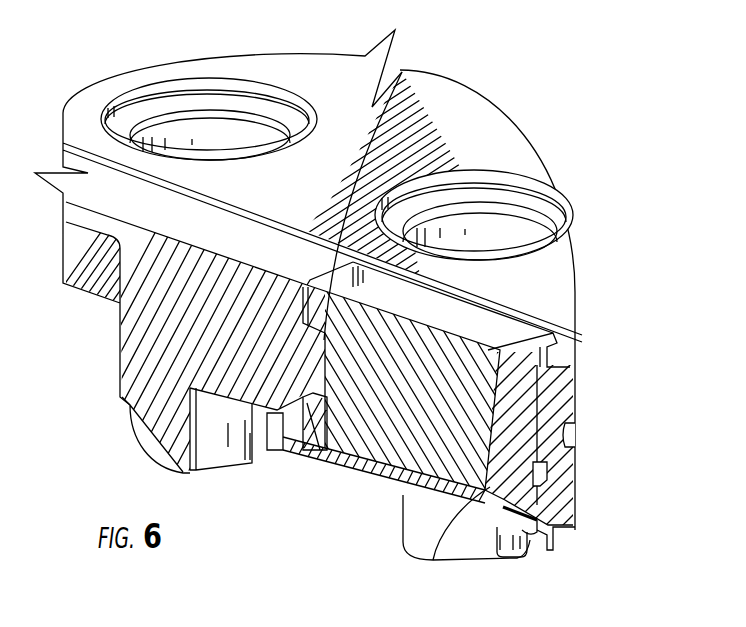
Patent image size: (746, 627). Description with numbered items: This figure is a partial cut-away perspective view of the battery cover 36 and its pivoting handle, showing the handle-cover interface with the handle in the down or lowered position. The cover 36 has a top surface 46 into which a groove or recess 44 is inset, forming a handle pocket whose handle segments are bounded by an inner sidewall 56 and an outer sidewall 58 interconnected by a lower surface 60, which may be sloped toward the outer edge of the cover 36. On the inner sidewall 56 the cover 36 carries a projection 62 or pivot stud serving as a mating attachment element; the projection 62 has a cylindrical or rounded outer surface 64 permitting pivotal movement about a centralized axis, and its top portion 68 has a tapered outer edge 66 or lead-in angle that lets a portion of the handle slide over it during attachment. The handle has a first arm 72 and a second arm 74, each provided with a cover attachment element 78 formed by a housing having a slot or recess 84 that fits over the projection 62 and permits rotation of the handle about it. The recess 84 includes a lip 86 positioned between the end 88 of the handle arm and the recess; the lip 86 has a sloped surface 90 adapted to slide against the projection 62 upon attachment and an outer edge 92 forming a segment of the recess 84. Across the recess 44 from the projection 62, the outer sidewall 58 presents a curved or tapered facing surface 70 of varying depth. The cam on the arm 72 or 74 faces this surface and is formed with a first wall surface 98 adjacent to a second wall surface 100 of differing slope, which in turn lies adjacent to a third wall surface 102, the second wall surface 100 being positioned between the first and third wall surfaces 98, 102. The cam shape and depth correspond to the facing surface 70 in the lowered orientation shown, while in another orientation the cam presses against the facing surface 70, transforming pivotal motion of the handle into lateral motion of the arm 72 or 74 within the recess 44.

The battery cover 36 is at (337, 77).
The top surface 46 is at (313, 196).
The rounded outer surface 64 is at (430, 78).
The top portion 68 is at (318, 275).
The tapered outer edge 66 is at (305, 347).
The projection 62 is at (313, 365).
The cover attachment element 78 is at (413, 393).
The recess 44 is at (530, 328).
The first arm 72 is at (450, 425).
The second arm 74 is at (529, 507).
The first wall surface 98 is at (493, 398).
The second wall surface 100 is at (483, 441).
The facing surface 70 is at (540, 473).
The third wall surface 102 is at (545, 500).
The outer sidewall 58 is at (500, 548).
The lower surface 60 is at (437, 560).
The end of the handle arm 88 is at (363, 463).
The outer edge 92 is at (373, 470).
The sloped surface 90 is at (308, 457).
The inner sidewall 56 is at (305, 435).
The lip 86 is at (232, 462).
The recess 84 is at (330, 373).